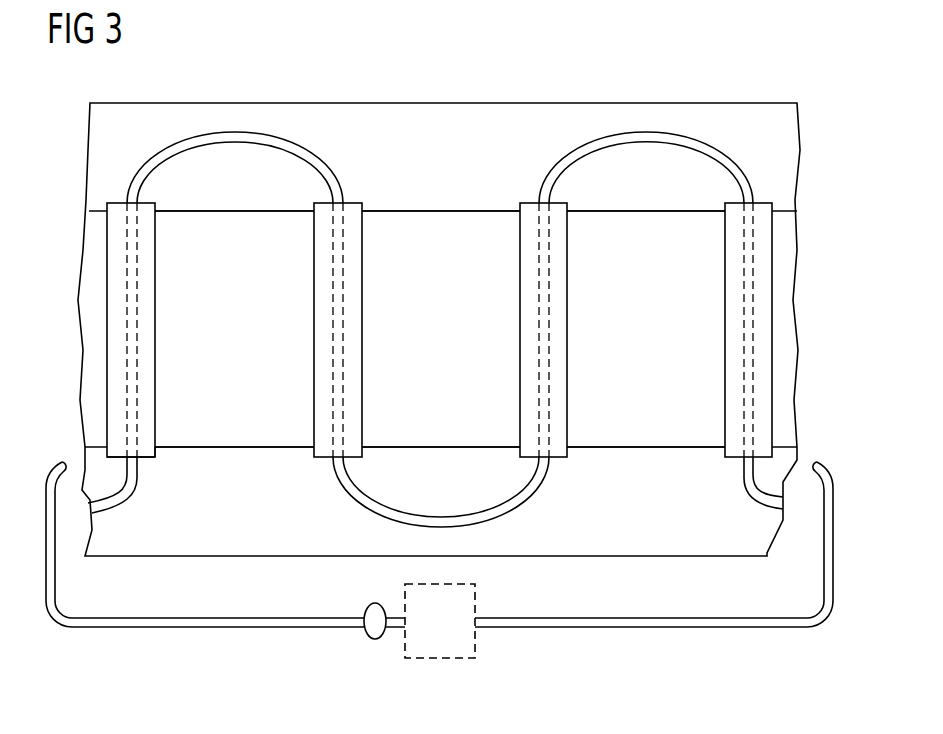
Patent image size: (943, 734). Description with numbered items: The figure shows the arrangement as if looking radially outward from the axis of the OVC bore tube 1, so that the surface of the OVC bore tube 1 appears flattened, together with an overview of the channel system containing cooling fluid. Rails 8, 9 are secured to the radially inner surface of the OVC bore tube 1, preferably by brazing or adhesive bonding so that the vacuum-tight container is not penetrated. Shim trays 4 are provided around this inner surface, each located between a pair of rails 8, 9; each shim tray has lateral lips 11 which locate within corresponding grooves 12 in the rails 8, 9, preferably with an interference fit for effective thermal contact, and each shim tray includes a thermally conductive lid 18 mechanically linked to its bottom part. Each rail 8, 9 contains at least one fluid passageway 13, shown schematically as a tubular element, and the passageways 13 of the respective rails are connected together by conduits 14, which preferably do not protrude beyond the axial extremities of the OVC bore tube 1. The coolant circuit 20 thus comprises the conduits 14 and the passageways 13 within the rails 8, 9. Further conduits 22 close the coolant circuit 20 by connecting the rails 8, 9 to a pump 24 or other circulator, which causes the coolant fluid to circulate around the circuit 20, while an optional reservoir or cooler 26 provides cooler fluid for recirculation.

The OVC bore tube 1 is at (470, 108).
The shim tray 4 is at (225, 207).
The rail 8 is at (124, 207).
The rail 9 is at (348, 206).
The lateral lip 11 is at (157, 452).
The groove 12 is at (157, 458).
The fluid passageway 13 is at (130, 333).
The conduit 14 is at (308, 154).
The lid 18 is at (236, 447).
The coolant circuit 20 is at (439, 583).
The further conduit 22 is at (286, 618).
The pump 24 is at (375, 610).
The reservoir or cooler 26 is at (475, 648).